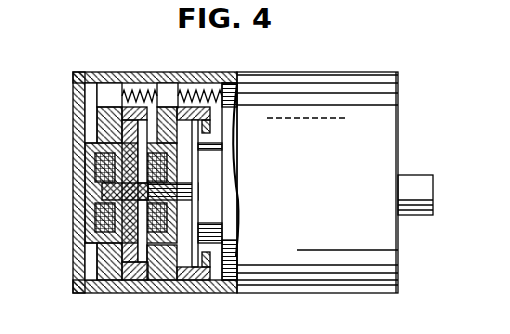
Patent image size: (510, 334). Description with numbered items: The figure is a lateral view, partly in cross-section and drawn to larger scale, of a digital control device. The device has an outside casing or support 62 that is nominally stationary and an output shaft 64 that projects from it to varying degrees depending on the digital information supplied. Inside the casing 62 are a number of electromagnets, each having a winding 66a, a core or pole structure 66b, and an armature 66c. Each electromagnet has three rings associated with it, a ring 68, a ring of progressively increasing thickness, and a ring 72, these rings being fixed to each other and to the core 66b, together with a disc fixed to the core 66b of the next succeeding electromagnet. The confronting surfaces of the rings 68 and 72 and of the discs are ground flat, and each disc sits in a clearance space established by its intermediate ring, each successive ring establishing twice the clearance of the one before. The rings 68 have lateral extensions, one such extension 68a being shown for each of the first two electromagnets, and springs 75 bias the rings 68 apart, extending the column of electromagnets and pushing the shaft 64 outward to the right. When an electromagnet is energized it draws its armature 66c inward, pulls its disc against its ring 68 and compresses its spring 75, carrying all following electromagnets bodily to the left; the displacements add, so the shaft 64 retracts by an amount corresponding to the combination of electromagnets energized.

The outside casing 62 is at (340, 72).
The output shaft 64 is at (418, 176).
The ring 68 is at (103, 278).
The lateral extension 68a is at (106, 84).
The spring 75 is at (132, 88).
The winding 66a is at (102, 166).
The core 66b is at (92, 148).
The armature 66c is at (112, 192).
The ring 72 is at (150, 278).